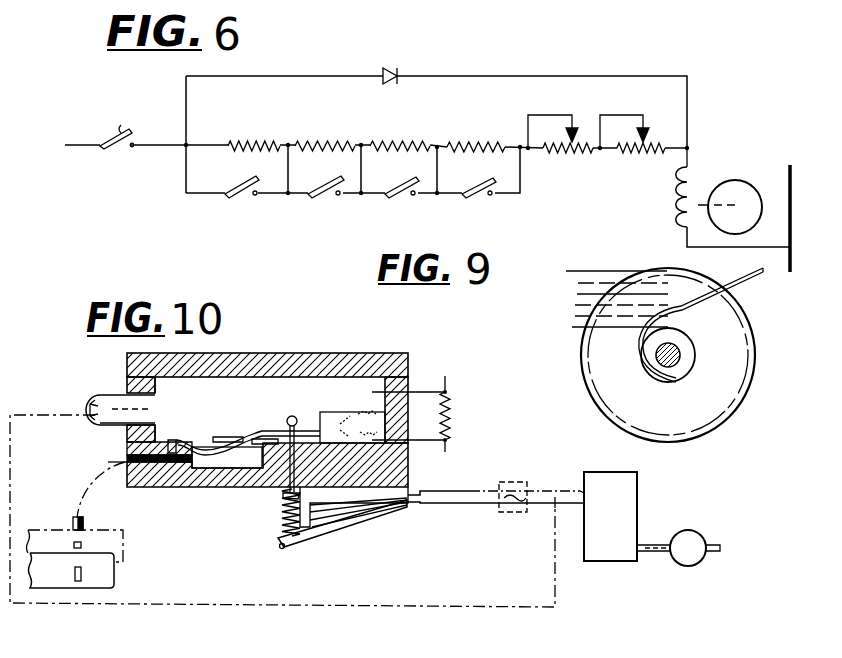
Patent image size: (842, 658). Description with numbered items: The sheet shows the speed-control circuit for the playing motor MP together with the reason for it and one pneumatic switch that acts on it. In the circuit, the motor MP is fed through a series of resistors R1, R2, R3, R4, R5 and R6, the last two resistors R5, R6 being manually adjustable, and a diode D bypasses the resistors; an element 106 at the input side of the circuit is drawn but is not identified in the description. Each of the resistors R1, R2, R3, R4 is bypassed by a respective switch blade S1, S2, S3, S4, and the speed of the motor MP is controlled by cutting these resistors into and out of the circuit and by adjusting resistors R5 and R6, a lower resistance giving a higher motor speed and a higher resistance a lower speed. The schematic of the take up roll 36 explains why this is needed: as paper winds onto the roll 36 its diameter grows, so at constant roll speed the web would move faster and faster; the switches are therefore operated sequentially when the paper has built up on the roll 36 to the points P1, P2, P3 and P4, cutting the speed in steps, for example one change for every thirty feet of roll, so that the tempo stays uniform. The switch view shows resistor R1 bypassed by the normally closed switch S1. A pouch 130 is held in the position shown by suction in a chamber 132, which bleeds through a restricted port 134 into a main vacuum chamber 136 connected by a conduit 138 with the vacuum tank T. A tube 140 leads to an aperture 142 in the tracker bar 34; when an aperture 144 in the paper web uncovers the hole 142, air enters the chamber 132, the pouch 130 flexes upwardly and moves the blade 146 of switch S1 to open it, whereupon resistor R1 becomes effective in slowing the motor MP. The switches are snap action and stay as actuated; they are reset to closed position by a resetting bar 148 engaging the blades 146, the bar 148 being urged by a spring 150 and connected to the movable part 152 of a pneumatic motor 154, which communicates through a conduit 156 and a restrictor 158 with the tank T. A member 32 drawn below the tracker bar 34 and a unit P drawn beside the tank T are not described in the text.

In FIG. 6, the main switch 106 is at (106, 119).
In FIG. 6, the diode D is at (401, 74).
In FIG. 6, the resistor R1 is at (268, 140).
In FIG. 10, the resistor R1 is at (455, 417).
In FIG. 6, the resistor R2 is at (345, 128).
In FIG. 6, the resistor R3 is at (421, 132).
In FIG. 6, the resistor R4 is at (496, 132).
In FIG. 6, the manually adjustable resistor R5 is at (567, 152).
In FIG. 6, the manually adjustable resistor R6 is at (634, 152).
In FIG. 6, the switch blade S1 is at (243, 184).
In FIG. 10, the switch blade S1 is at (348, 412).
In FIG. 6, the switch blade S2 is at (325, 184).
In FIG. 6, the switch blade S3 is at (400, 185).
In FIG. 6, the switch blade S4 is at (476, 185).
In FIG. 6, the playing motor MP is at (756, 171).
In FIG. 9, the take up roll 36 is at (692, 352).
In FIG. 9, the point P1 is at (572, 312).
In FIG. 9, the point P2 is at (572, 305).
In FIG. 9, the point P3 is at (573, 293).
In FIG. 9, the point P4 is at (575, 283).
In FIG. 10, the pouch 130 is at (233, 445).
In FIG. 10, the chamber 132 is at (197, 468).
In FIG. 10, the restricted port 134 is at (160, 440).
In FIG. 10, the main vacuum chamber 136 is at (242, 401).
In FIG. 10, the conduit 138 is at (103, 396).
In FIG. 10, the tube 140 is at (83, 485).
In FIG. 10, the aperture 142 is at (81, 541).
In FIG. 10, the aperture 144 is at (80, 581).
In FIG. 10, the blade 146 is at (262, 436).
In FIG. 10, the resetting bar 148 is at (325, 419).
In FIG. 10, the spring 150 is at (272, 513).
In FIG. 10, the movable part 152 is at (316, 528).
In FIG. 10, the pneumatic motor 154 is at (346, 515).
In FIG. 10, the conduit 156 is at (470, 508).
In FIG. 10, the restrictor 158 is at (509, 494).
In FIG. 10, the control member 32 is at (110, 575).
In FIG. 10, the tracker bar 34 is at (121, 545).
In FIG. 10, the vacuum tank T is at (627, 516).
In FIG. 10, the pump P is at (695, 548).